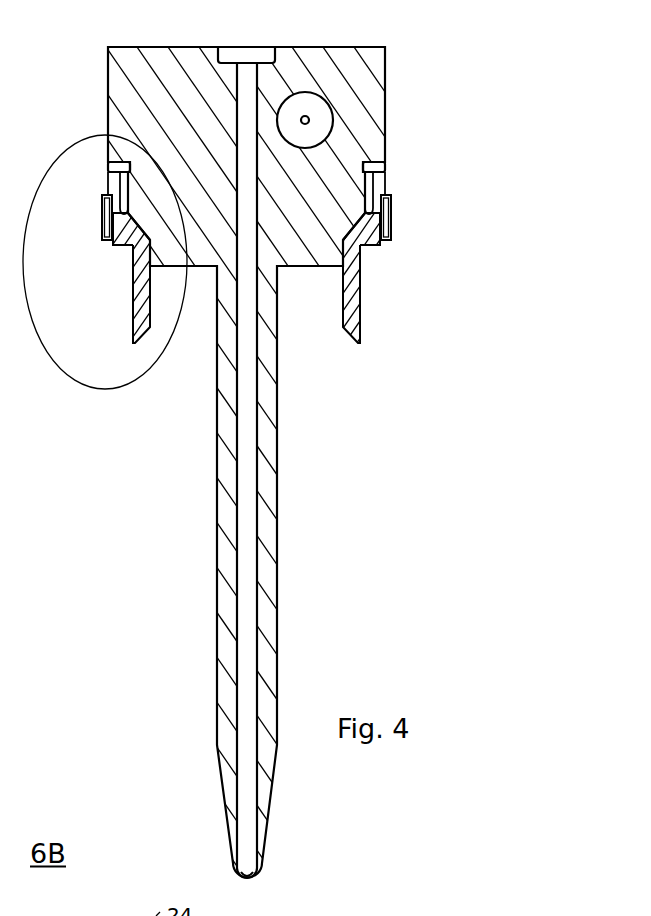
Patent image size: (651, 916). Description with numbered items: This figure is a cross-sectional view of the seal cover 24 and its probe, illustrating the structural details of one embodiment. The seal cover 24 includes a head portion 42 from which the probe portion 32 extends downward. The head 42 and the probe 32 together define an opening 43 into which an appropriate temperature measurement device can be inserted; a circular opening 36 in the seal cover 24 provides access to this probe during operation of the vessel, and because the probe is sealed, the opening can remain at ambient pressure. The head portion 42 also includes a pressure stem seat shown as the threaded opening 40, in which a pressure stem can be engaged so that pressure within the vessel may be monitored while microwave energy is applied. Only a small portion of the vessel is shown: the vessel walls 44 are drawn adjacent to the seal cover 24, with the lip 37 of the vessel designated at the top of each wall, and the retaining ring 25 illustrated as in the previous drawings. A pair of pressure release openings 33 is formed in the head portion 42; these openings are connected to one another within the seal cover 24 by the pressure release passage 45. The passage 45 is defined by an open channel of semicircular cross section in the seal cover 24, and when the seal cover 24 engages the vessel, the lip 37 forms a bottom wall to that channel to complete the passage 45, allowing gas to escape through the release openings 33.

The seal cover 24 is at (94, 63).
The retaining ring 25 is at (107, 220).
The probe portion 32 is at (268, 432).
The pressure release openings 33 is at (118, 166).
The circular opening 36 is at (243, 50).
The lip 37 is at (128, 250).
The threaded opening 40 is at (333, 125).
The head portion 42 is at (137, 125).
The opening 43 is at (245, 331).
The vessel walls 44 is at (138, 303).
The pressure release passage 45 is at (122, 205).